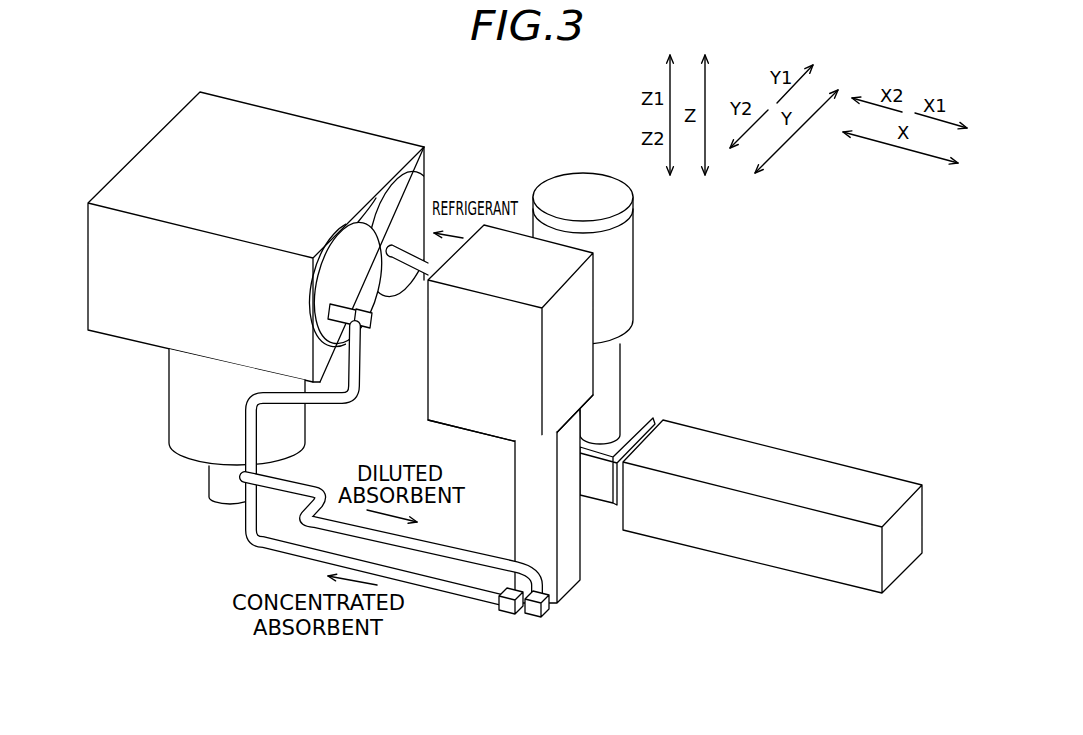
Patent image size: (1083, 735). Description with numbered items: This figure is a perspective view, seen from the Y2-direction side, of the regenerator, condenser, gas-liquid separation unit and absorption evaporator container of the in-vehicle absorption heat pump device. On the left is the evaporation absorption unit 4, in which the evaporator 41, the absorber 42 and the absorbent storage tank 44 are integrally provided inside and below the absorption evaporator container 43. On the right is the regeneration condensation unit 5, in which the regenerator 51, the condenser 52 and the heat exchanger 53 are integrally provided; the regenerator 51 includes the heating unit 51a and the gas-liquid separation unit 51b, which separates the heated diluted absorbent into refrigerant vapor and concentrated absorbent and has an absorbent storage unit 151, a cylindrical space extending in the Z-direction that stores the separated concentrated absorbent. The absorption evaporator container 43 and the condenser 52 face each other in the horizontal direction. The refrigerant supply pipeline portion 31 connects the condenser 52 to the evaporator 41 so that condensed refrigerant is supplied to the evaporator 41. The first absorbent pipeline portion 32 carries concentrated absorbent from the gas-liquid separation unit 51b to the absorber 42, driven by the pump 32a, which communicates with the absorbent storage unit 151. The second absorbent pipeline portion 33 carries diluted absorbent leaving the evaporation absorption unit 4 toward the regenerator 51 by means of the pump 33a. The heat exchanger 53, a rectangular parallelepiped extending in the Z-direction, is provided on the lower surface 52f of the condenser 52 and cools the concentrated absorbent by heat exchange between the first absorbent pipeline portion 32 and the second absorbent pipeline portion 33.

The evaporation absorption unit 4 is at (267, 260).
The absorption evaporator container 43 is at (148, 146).
The evaporator 41 is at (406, 199).
The absorber 42 is at (360, 245).
The absorbent storage tank 44 is at (169, 394).
The refrigerant supply pipeline portion 31 is at (422, 278).
The first absorbent pipeline portion 32 is at (425, 588).
The pump 32a is at (653, 418).
The second absorbent pipeline portion 33 is at (478, 549).
The pump 33a is at (209, 502).
The regeneration condensation unit 5 is at (652, 397).
The regenerator 51 is at (727, 383).
The heating unit 51a is at (805, 466).
The gas-liquid separation unit 51b is at (638, 308).
The absorbent storage unit 151 is at (612, 377).
The condenser 52 is at (488, 336).
The lower surface 52f is at (466, 437).
The heat exchanger 53 is at (568, 584).